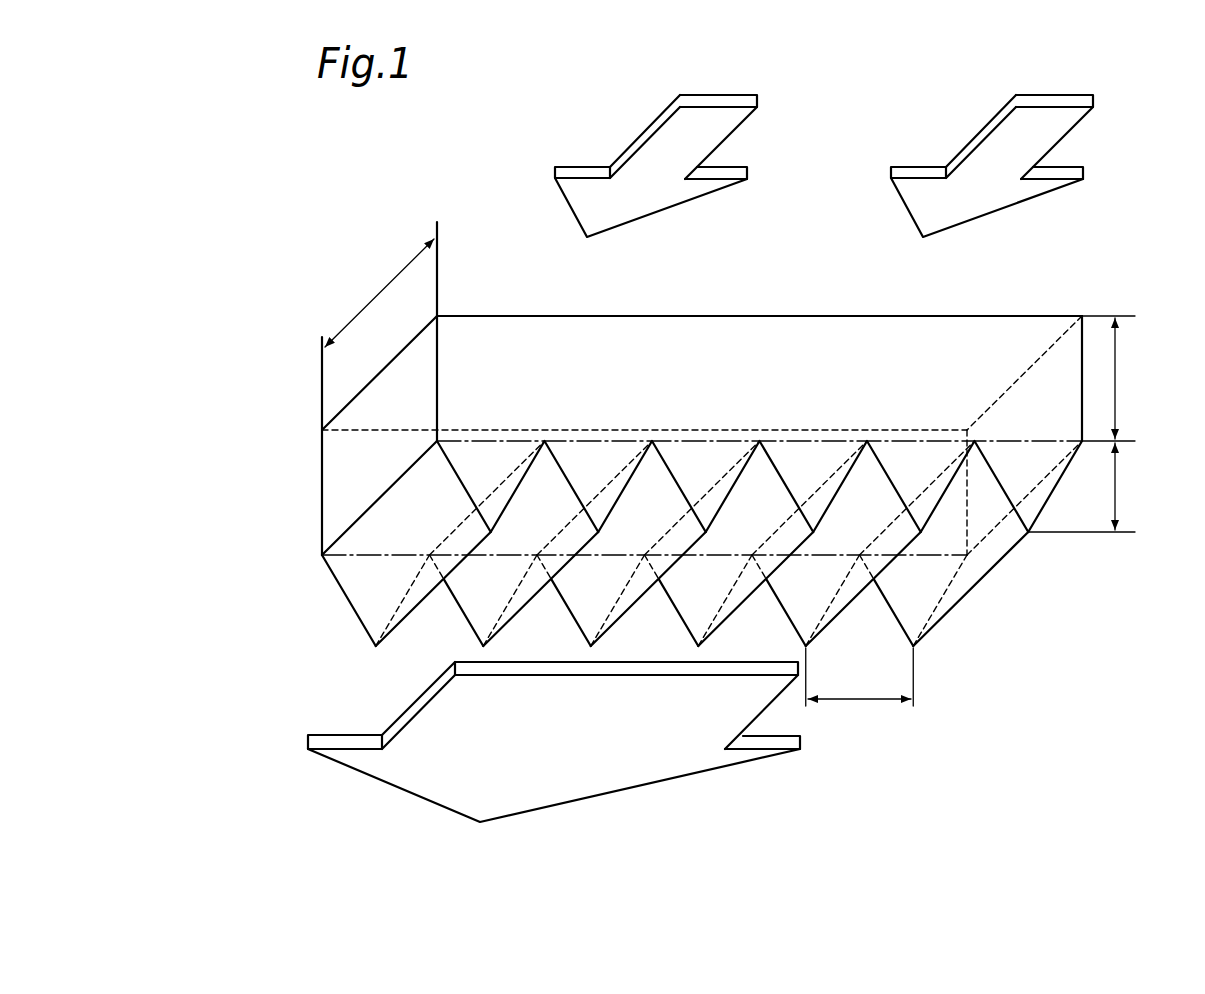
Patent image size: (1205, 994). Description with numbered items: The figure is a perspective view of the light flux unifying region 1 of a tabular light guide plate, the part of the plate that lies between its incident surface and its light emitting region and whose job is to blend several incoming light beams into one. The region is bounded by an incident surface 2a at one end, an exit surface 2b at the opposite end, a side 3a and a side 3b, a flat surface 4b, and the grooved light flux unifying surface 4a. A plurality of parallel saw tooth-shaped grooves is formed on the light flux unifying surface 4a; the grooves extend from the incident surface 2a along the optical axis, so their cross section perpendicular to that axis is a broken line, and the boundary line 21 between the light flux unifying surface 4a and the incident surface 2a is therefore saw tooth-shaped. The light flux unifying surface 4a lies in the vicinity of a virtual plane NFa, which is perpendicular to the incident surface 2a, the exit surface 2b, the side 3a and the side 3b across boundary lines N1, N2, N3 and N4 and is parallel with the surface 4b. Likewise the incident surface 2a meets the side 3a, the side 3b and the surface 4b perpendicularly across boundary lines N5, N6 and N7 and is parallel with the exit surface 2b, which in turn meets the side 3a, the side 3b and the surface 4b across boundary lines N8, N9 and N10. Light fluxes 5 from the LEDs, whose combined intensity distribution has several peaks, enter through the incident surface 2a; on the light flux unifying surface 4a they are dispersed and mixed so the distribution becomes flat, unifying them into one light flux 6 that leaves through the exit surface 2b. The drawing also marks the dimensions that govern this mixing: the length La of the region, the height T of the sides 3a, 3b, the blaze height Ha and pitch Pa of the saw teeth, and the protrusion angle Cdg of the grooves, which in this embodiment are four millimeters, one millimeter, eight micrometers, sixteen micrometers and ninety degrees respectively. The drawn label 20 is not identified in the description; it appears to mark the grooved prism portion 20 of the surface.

The light flux unifying region 1 is at (530, 294).
The incident surface 2a is at (997, 331).
The exit surface 2b is at (343, 466).
The side 3a is at (351, 403).
The side 3b is at (1067, 354).
The light flux unifying surface 4a is at (970, 574).
The surface 4b is at (640, 327).
The light fluxes 5 is at (662, 146).
The light flux 6 is at (677, 768).
The prism portion 20 is at (602, 436).
The boundary line 21 is at (463, 485).
The length La is at (379, 293).
The height T is at (1111, 378).
The height Ha is at (1092, 487).
The pitch Pa is at (860, 693).
The protrusion angle Cdg is at (1050, 495).
The boundary line N1 is at (1043, 440).
The boundary line N2 is at (942, 582).
The boundary line N3 is at (357, 522).
The boundary line N4 is at (975, 497).
The boundary line N5 is at (437, 366).
The boundary line N6 is at (1082, 349).
The boundary line N7 is at (703, 315).
The boundary line N8 is at (323, 495).
The boundary line N9 is at (978, 540).
The boundary line N10 is at (557, 430).
The virtual plane NFa is at (353, 543).